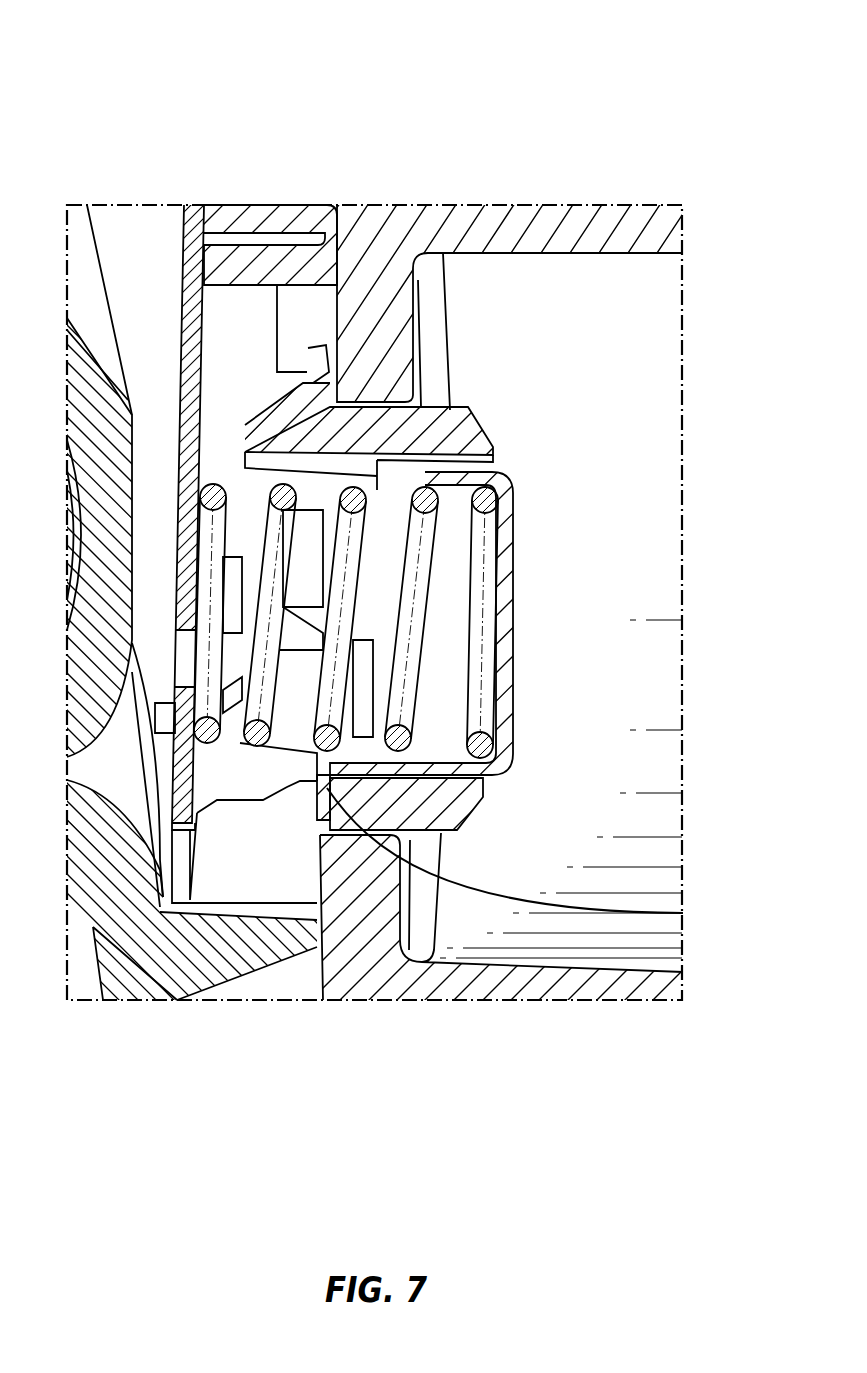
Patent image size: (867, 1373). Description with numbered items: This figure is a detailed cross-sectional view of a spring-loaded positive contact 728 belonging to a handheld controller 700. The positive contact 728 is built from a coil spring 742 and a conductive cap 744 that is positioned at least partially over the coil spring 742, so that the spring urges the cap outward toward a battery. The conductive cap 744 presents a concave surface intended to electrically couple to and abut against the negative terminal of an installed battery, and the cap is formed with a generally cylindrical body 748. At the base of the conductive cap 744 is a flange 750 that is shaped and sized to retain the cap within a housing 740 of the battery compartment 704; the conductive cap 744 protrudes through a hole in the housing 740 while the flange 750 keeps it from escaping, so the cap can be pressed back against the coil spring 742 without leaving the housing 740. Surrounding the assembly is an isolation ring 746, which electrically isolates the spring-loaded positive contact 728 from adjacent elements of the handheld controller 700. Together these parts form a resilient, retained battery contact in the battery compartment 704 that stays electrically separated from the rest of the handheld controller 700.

The handheld controller 700 is at (104, 80).
The battery compartment 704 is at (655, 302).
The spring-loaded positive contact 728 is at (578, 670).
The housing 740 is at (360, 1000).
The coil spring 742 is at (427, 620).
The conductive cap 744 is at (505, 567).
The isolation ring 746 is at (490, 437).
The generally cylindrical body 748 is at (447, 778).
The flange 750 is at (683, 913).